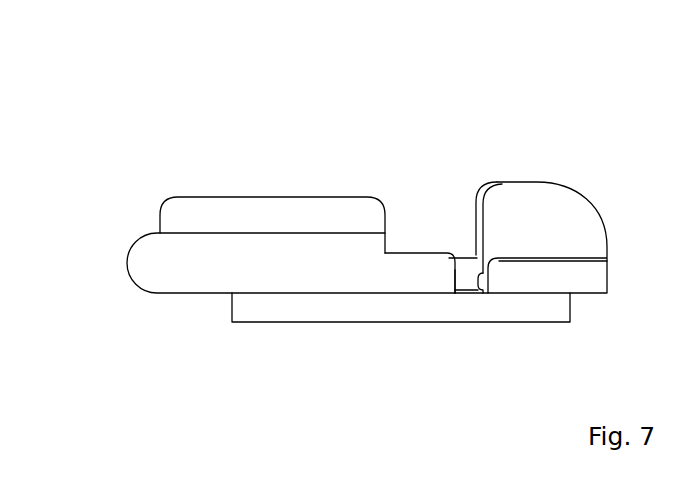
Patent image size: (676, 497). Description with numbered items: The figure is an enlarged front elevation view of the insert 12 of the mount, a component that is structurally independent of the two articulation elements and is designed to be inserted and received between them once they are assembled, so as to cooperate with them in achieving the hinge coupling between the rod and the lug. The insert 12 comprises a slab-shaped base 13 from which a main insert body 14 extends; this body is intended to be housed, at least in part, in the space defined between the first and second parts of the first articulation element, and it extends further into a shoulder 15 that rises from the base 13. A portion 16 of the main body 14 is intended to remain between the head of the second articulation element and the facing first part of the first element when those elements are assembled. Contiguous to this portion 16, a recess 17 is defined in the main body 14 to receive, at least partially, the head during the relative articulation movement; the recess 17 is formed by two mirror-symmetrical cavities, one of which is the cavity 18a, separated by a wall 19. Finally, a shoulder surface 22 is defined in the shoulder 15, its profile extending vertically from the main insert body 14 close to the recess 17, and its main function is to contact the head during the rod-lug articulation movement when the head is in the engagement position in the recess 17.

The insert 12 is at (283, 176).
The slab-shaped base 13 is at (240, 306).
The main insert body 14 is at (190, 275).
The shoulder 15 is at (557, 205).
The portion of the main body 16 is at (440, 278).
The recess 17 is at (456, 246).
The cavity 18a is at (478, 292).
The wall 19 is at (464, 280).
The shoulder surface 22 is at (476, 213).